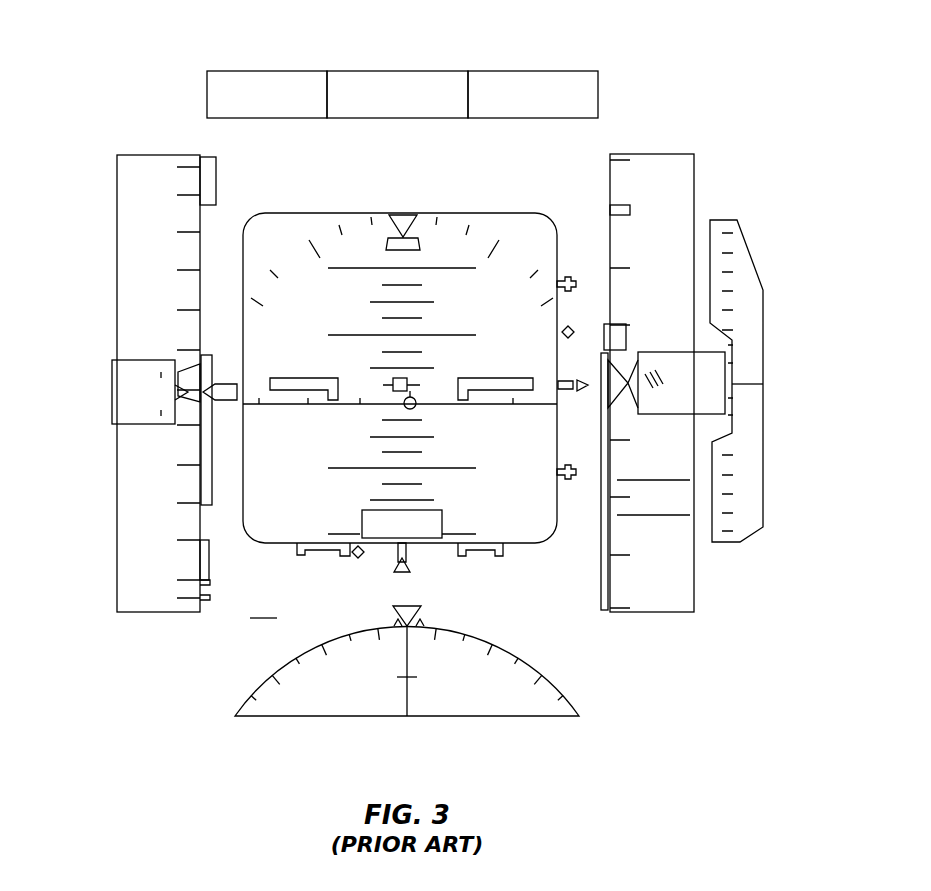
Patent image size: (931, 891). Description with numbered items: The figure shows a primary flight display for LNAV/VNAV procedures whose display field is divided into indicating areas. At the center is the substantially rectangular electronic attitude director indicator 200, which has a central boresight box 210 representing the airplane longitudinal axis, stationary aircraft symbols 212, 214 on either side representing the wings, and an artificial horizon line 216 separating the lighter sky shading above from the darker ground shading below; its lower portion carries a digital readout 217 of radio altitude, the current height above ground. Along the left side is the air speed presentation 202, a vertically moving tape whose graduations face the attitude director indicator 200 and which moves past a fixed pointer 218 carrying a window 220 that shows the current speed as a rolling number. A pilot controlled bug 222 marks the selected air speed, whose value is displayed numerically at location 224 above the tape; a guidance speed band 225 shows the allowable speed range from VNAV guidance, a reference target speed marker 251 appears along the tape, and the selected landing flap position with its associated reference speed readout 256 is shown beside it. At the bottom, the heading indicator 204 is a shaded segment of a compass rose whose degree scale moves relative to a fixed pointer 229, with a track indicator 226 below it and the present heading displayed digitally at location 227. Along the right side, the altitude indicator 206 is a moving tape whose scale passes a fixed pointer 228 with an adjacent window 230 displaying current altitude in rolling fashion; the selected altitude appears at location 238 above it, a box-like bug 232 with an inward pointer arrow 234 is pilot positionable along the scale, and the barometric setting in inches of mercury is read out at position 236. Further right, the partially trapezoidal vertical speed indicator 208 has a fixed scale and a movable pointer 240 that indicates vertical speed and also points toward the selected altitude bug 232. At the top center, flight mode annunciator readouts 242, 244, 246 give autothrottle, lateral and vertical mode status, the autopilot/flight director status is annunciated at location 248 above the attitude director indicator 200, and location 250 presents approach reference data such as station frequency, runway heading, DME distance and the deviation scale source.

The attitude director indicator 200 is at (478, 213).
The air speed presentation 202 is at (117, 192).
The heading indicator 204 is at (255, 695).
The altitude indicator 206 is at (610, 184).
The vertical speed indicator 208 is at (718, 543).
The boresight box 210 is at (402, 378).
The aircraft symbol 212 is at (278, 378).
The aircraft symbol 214 is at (466, 378).
The artificial horizon line 216 is at (270, 405).
The radio altitude digital readout 217 is at (437, 510).
The fixed pointer 218 is at (180, 383).
The window 220 is at (112, 385).
The air speed marker or bug 222 is at (229, 382).
The selected air speed readout location 224 is at (153, 117).
The guidance speed band 225 is at (207, 455).
The track indicator 226 is at (410, 716).
The present heading readout location 227 is at (338, 716).
The fixed altitude pointer 228 is at (628, 385).
The fixed heading pointer 229 is at (412, 620).
The altitude window 230 is at (679, 416).
The altitude marker or bug 232 is at (632, 355).
The pointer arrow 234 is at (603, 398).
The barometric setting readout 236 is at (655, 668).
The selected altitude readout location 238 is at (697, 112).
The vertical speed pointer 240 is at (766, 380).
The autothrottle mode annunciator readout 242 is at (266, 71).
The lateral mode annunciator readout 244 is at (355, 71).
The vertical mode annunciator readout 246 is at (488, 71).
The AFDS status annunciation location 248 is at (400, 195).
The approach reference location 250 is at (330, 166).
The reference target speed marker 251 is at (246, 584).
The reference speeds readout 256 is at (250, 622).